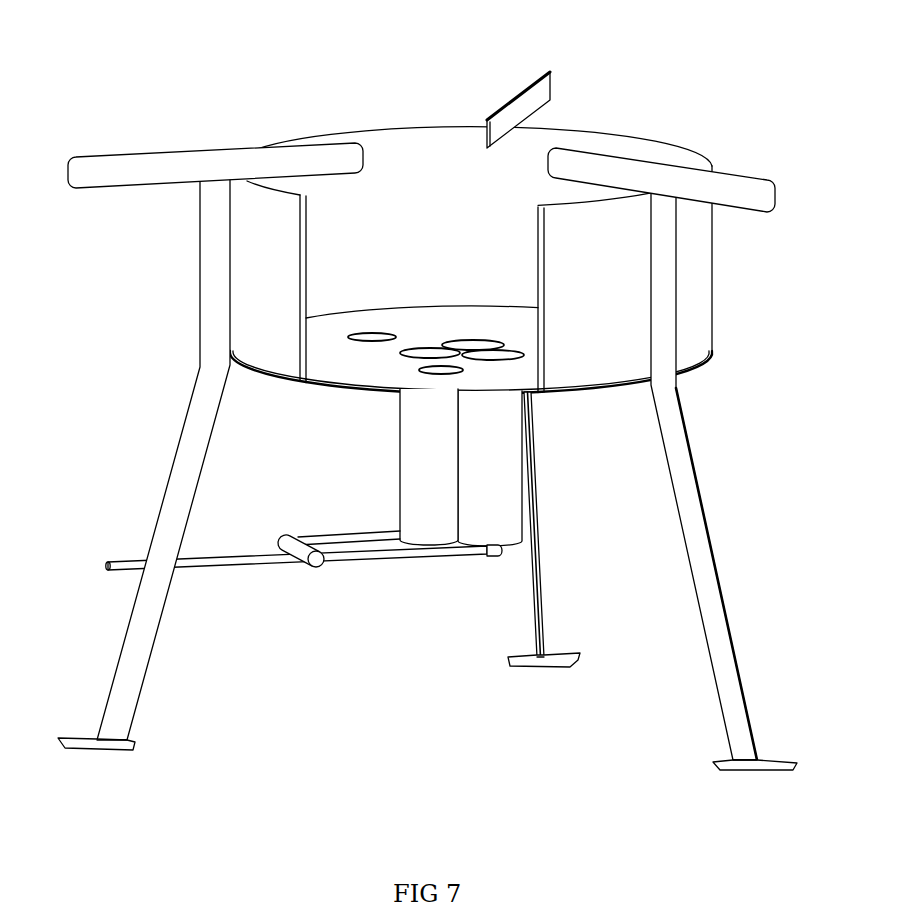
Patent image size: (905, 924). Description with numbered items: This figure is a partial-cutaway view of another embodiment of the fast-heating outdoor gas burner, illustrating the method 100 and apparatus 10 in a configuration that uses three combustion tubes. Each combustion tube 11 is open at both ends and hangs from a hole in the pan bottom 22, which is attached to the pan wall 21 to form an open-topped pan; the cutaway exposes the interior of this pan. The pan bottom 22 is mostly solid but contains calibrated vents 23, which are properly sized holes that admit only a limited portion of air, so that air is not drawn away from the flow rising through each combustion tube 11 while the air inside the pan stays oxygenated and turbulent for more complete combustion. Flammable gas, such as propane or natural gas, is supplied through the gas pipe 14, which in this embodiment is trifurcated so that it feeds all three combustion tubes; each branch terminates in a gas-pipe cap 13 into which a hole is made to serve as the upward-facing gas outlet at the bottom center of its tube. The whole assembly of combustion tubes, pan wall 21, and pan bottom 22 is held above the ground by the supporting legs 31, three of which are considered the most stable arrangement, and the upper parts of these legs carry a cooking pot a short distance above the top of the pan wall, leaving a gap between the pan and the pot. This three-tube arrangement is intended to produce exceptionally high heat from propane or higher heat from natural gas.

The fast-heating outdoor gas burner method 100 is at (164, 38).
The fast-heating outdoor gas burner apparatus 10 is at (169, 99).
The pan wall 21 is at (434, 138).
The pan bottom 22 is at (422, 350).
The calibrated vents 23 is at (373, 333).
The combustion tube 11 is at (407, 447).
The gas-pipe cap 13 is at (492, 557).
The gas pipe 14 is at (253, 556).
The supporting legs 31 is at (702, 541).